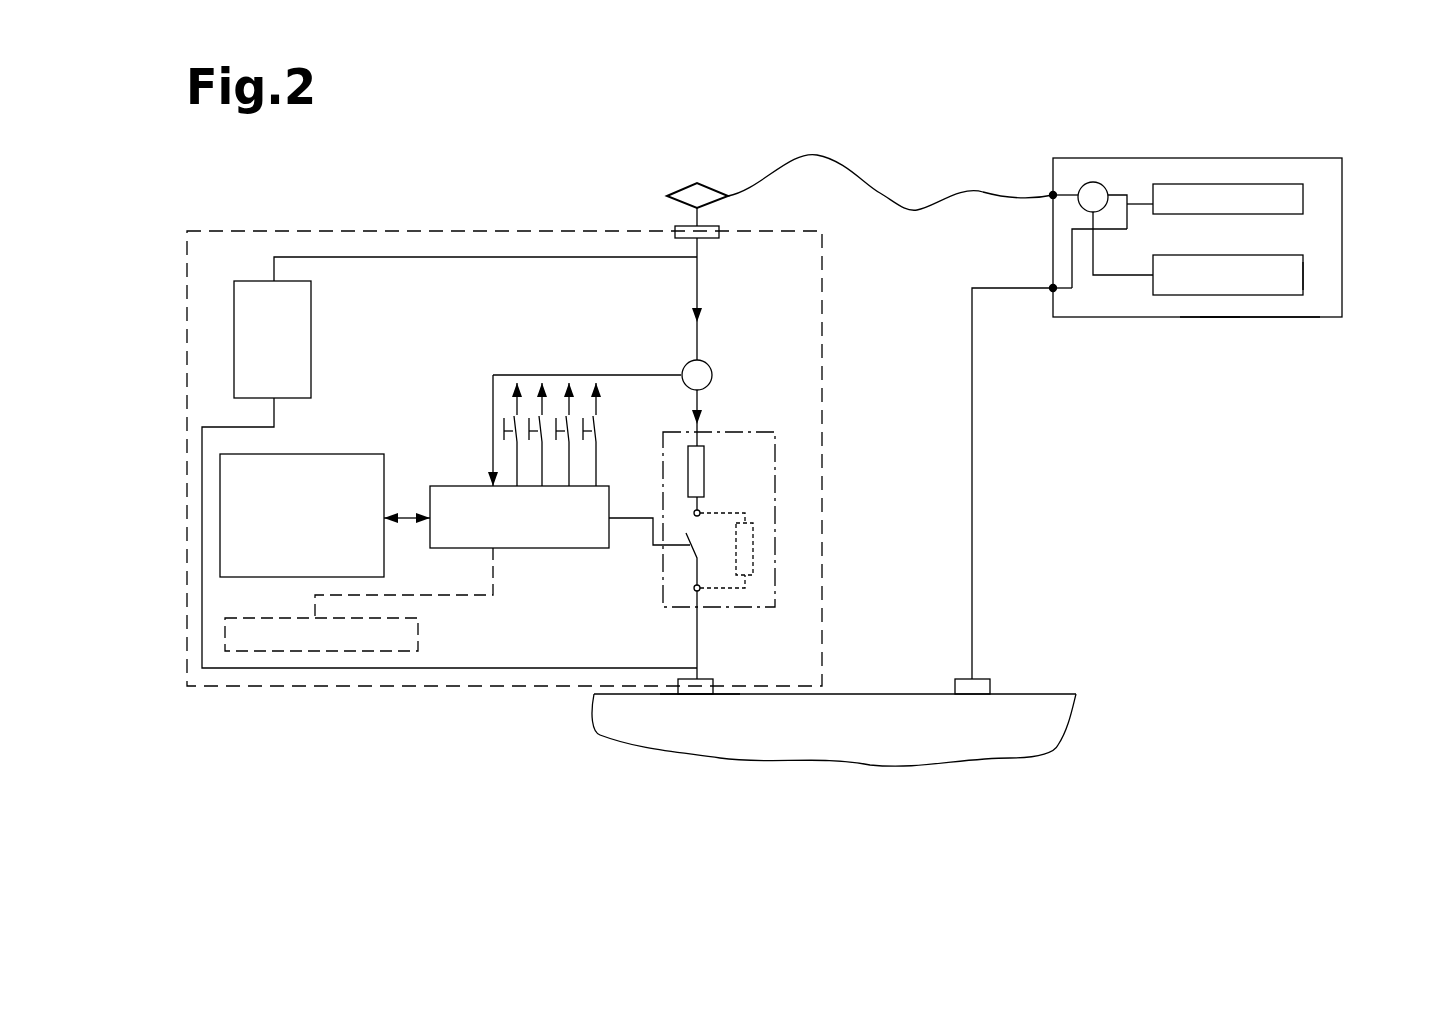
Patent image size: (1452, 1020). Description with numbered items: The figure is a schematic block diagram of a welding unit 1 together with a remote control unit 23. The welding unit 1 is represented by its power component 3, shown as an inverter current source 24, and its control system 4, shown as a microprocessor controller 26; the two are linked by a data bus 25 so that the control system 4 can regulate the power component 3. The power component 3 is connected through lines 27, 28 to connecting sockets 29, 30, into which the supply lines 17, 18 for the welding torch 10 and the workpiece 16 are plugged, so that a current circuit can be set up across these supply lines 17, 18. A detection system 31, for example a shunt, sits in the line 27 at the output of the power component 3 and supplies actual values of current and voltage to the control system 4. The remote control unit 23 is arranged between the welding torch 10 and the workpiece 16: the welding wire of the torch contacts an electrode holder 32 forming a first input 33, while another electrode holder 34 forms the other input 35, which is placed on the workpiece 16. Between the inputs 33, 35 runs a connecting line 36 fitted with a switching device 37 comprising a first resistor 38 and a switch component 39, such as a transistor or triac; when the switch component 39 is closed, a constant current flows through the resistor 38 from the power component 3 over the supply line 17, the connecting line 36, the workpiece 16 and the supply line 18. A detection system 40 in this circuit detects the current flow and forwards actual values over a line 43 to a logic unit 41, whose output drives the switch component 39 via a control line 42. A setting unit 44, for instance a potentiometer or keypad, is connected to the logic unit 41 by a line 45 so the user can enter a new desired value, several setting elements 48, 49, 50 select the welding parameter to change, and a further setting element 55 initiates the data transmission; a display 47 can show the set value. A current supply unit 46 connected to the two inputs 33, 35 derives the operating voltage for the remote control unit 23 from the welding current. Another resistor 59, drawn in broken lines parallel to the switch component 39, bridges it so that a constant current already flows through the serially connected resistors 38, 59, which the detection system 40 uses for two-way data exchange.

The welding unit 1 is at (1210, 366).
The power component 3 is at (1261, 163).
The control system 4 is at (1262, 306).
The welding torch 10 is at (675, 176).
The workpiece 16 is at (1000, 718).
The supply line 17 is at (917, 208).
The supply line 18 is at (973, 448).
The remote control unit 23 is at (322, 732).
The inverter current source 24 is at (1190, 200).
The data bus 25 is at (1304, 275).
The microprocessor controller 26 is at (1273, 280).
The line 27 is at (1125, 195).
The line 28 is at (1112, 229).
The connecting socket 29 is at (1053, 195).
The connecting socket 30 is at (1053, 290).
The detection system 31 is at (1073, 212).
The electrode holder 32 is at (757, 147).
The first input 33 is at (688, 230).
The electrode holder 34 is at (702, 700).
The input 35 is at (700, 688).
The connecting line 36 is at (698, 275).
The switching device 37 is at (763, 422).
The first resistor 38 is at (700, 470).
The switch component 39 is at (685, 574).
The detection system 40 is at (718, 367).
The logic unit 41 is at (530, 516).
The control line 42 is at (640, 517).
The line 43 is at (656, 374).
The setting unit 44 is at (372, 582).
The line 45 is at (405, 518).
The current supply unit 46 is at (305, 265).
The display 47 is at (277, 633).
The setting element 48 is at (537, 365).
The setting element 49 is at (567, 365).
The setting element 50 is at (592, 365).
The setting element 55 is at (483, 431).
The other resistor 59 is at (753, 548).